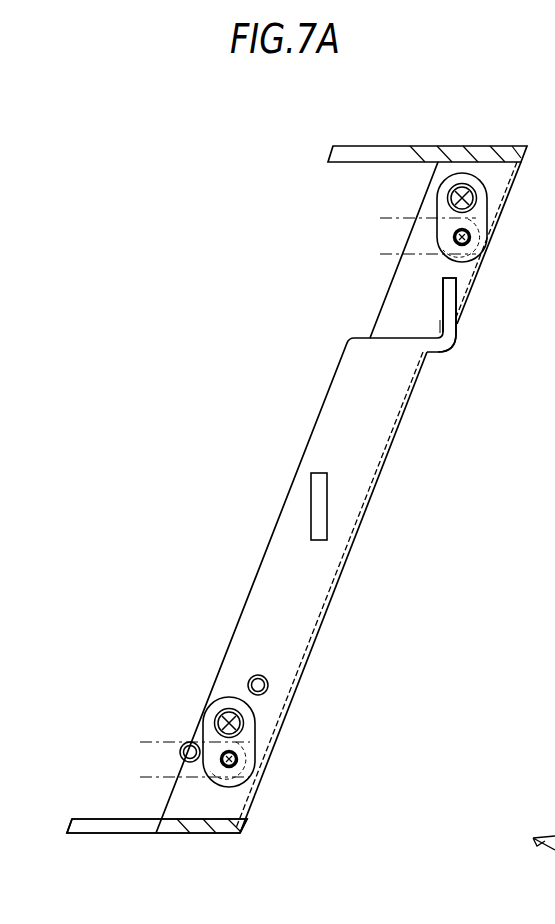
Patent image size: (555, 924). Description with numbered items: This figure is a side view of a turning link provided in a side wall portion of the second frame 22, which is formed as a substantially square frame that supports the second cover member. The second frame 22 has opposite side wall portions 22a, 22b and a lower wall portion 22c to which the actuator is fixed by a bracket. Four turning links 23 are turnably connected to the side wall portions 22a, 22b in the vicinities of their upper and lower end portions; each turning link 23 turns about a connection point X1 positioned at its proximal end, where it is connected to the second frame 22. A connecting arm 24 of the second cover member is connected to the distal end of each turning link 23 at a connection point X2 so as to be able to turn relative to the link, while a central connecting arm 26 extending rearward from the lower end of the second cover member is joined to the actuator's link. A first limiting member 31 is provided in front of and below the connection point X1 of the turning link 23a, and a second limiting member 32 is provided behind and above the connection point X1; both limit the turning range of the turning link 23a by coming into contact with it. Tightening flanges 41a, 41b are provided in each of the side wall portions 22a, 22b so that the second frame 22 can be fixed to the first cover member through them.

The second frame 22 is at (288, 484).
The side wall portion 22a is at (376, 495).
The side wall portion 22b is at (310, 614).
The lower wall portion 22c is at (177, 834).
The turning link 23 is at (290, 480).
The turning link 23a is at (229, 742).
The connecting arm 24 is at (387, 258).
The connecting arm 26 is at (544, 763).
The first limiting member 31 is at (186, 742).
The second limiting member 32 is at (250, 676).
The tightening flange 41a is at (453, 287).
The tightening flange 41b is at (328, 498).
The connection point X1 is at (473, 196).
The connection point X2 is at (470, 237).